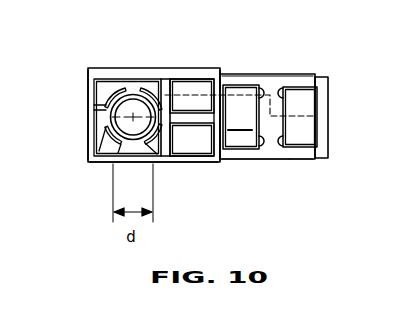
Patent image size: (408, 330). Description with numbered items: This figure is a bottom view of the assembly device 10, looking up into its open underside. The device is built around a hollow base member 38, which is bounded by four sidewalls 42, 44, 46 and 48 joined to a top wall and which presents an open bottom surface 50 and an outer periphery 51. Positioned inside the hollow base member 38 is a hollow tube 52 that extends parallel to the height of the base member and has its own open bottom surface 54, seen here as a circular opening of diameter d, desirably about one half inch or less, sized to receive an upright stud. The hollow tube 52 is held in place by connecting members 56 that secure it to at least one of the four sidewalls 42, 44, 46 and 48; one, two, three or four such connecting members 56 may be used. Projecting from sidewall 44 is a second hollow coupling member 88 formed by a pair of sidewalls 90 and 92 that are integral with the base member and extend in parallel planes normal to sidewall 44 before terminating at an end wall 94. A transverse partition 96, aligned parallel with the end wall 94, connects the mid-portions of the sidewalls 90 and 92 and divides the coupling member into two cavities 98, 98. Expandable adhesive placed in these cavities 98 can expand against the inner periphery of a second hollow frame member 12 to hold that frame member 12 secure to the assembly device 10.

The assembly device 10 is at (279, 27).
The second hollow frame member 12 is at (65, 105).
The hollow base member 38 is at (180, 65).
The sidewall 42 is at (97, 68).
The sidewall 44 is at (220, 73).
The sidewall 46 is at (108, 163).
The sidewall 48 is at (88, 135).
The open bottom surface 50 is at (190, 96).
The outer periphery 51 is at (222, 165).
The hollow tube 52 is at (123, 92).
The open bottom surface 54 is at (147, 95).
The connecting member 56 is at (133, 84).
The second hollow coupling member 88 is at (300, 75).
The sidewall 90 is at (290, 160).
The sidewall 92 is at (268, 74).
The end wall 94 is at (331, 97).
The transverse partition 96 is at (272, 160).
The cavity 98 is at (270, 117).